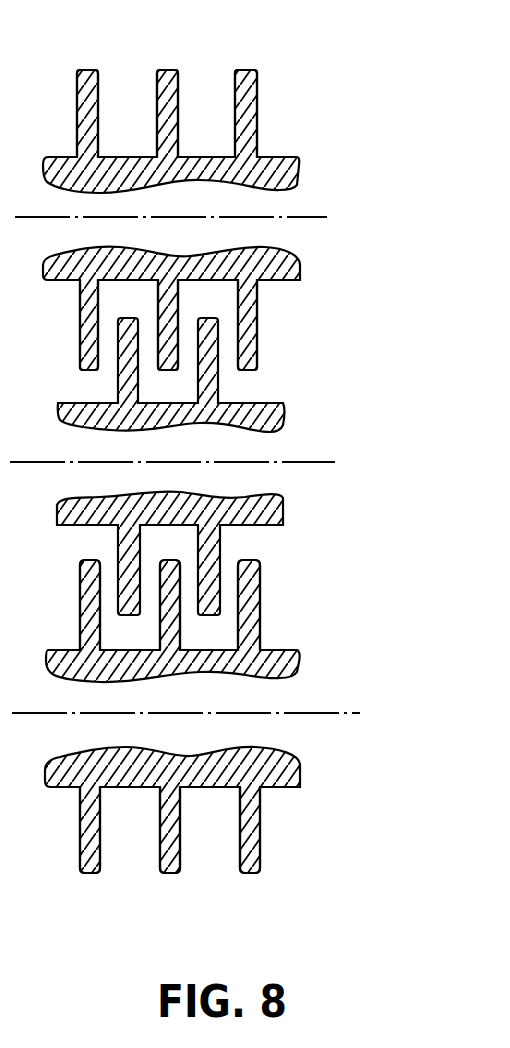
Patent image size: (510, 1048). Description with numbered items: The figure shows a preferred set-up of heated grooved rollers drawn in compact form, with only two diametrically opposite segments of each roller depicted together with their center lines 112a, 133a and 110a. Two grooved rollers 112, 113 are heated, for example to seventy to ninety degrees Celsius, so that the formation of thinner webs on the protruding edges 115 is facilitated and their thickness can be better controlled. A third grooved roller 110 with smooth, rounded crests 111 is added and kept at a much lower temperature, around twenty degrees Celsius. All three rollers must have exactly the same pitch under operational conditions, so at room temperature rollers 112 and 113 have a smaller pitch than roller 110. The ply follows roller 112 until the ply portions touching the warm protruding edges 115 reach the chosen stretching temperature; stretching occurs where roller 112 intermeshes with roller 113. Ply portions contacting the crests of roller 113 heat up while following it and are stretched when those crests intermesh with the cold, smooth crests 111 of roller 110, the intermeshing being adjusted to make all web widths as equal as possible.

The third grooved roller 110 is at (293, 667).
The smooth rounded crests 111 is at (257, 560).
The grooved roller 112 is at (293, 177).
The grooved roller 113 is at (280, 430).
The protruding edges 115 is at (75, 62).
The center line of roller 110 110a is at (216, 715).
The center line of roller 112 112a is at (197, 222).
The parting plane of third plate 133a is at (203, 463).